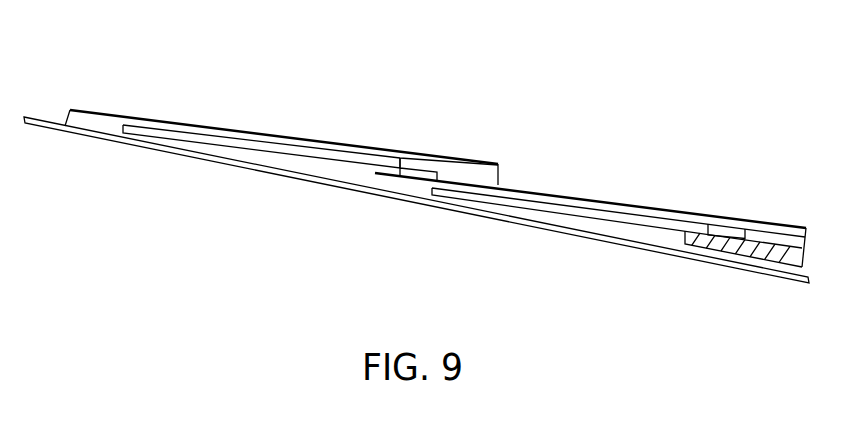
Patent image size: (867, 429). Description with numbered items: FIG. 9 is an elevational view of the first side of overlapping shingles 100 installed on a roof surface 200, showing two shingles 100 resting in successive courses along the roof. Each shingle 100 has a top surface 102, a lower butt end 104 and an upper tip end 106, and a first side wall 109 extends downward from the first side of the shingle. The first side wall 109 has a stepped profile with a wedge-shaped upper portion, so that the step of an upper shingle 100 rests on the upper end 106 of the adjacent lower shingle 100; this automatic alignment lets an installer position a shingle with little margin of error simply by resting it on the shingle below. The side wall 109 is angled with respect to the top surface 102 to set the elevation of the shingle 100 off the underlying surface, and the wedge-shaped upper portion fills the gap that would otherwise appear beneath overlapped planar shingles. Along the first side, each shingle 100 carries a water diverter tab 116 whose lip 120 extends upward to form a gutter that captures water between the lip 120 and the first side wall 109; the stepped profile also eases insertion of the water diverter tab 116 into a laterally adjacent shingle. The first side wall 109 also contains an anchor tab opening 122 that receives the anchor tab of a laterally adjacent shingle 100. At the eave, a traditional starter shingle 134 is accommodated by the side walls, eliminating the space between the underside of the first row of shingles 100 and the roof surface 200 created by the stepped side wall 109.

The shingle 100 is at (349, 109).
The top surface 102 is at (200, 123).
The lower end 104 is at (500, 163).
The upper end 106 is at (63, 110).
The first side wall 109 is at (93, 122).
The water diverter tab 116 is at (259, 160).
The lip 120 is at (293, 158).
The anchor tab opening 122 is at (407, 172).
The starter shingle 134 is at (720, 248).
The roof surface 200 is at (41, 127).